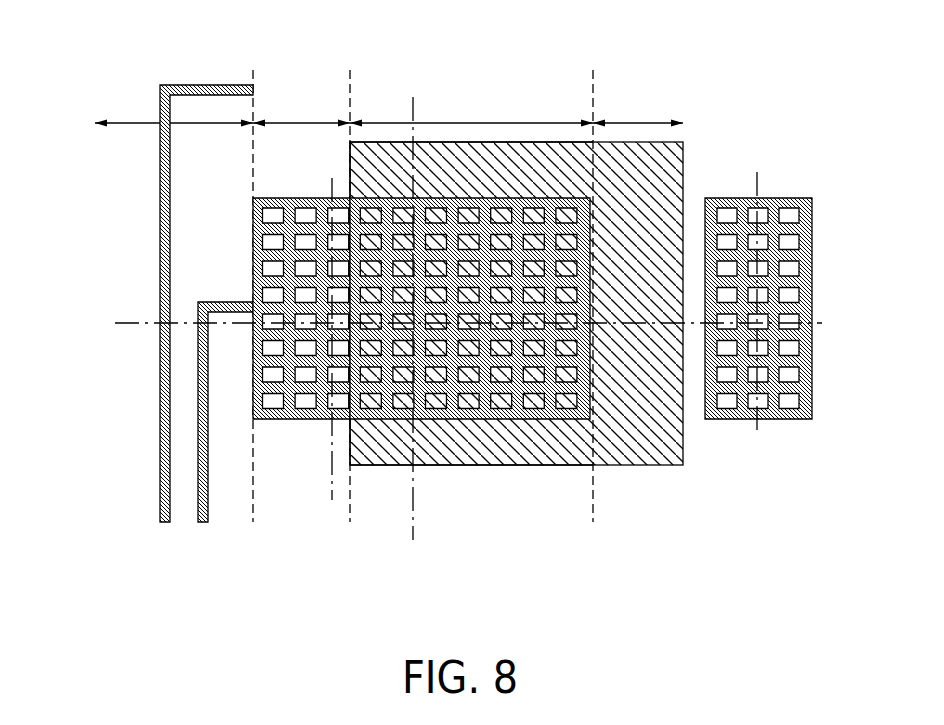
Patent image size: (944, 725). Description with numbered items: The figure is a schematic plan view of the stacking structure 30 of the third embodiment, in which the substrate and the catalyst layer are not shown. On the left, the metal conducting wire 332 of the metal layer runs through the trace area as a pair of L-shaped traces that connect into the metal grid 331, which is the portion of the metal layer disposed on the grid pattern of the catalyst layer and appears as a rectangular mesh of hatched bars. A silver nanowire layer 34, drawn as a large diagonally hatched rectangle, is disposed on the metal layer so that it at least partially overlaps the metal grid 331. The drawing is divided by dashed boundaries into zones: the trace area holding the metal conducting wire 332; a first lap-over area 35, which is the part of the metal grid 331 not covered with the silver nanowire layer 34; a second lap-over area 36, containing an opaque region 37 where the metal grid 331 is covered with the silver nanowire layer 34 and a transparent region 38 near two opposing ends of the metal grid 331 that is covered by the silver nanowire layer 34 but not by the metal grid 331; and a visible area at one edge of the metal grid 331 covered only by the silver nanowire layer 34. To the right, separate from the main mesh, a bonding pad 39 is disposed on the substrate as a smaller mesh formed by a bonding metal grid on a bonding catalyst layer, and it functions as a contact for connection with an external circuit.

The stacking structure 30 is at (54, 73).
The silver nanowire layer 34 is at (645, 440).
The first lap-over area 35 is at (301, 296).
The second lap-over area 36 is at (471, 296).
The opaque region 37 is at (393, 427).
The transparent region 38 is at (488, 443).
The bonding pad 39 is at (814, 197).
The metal grid 331 is at (421, 361).
The metal conducting wire 332 is at (198, 448).